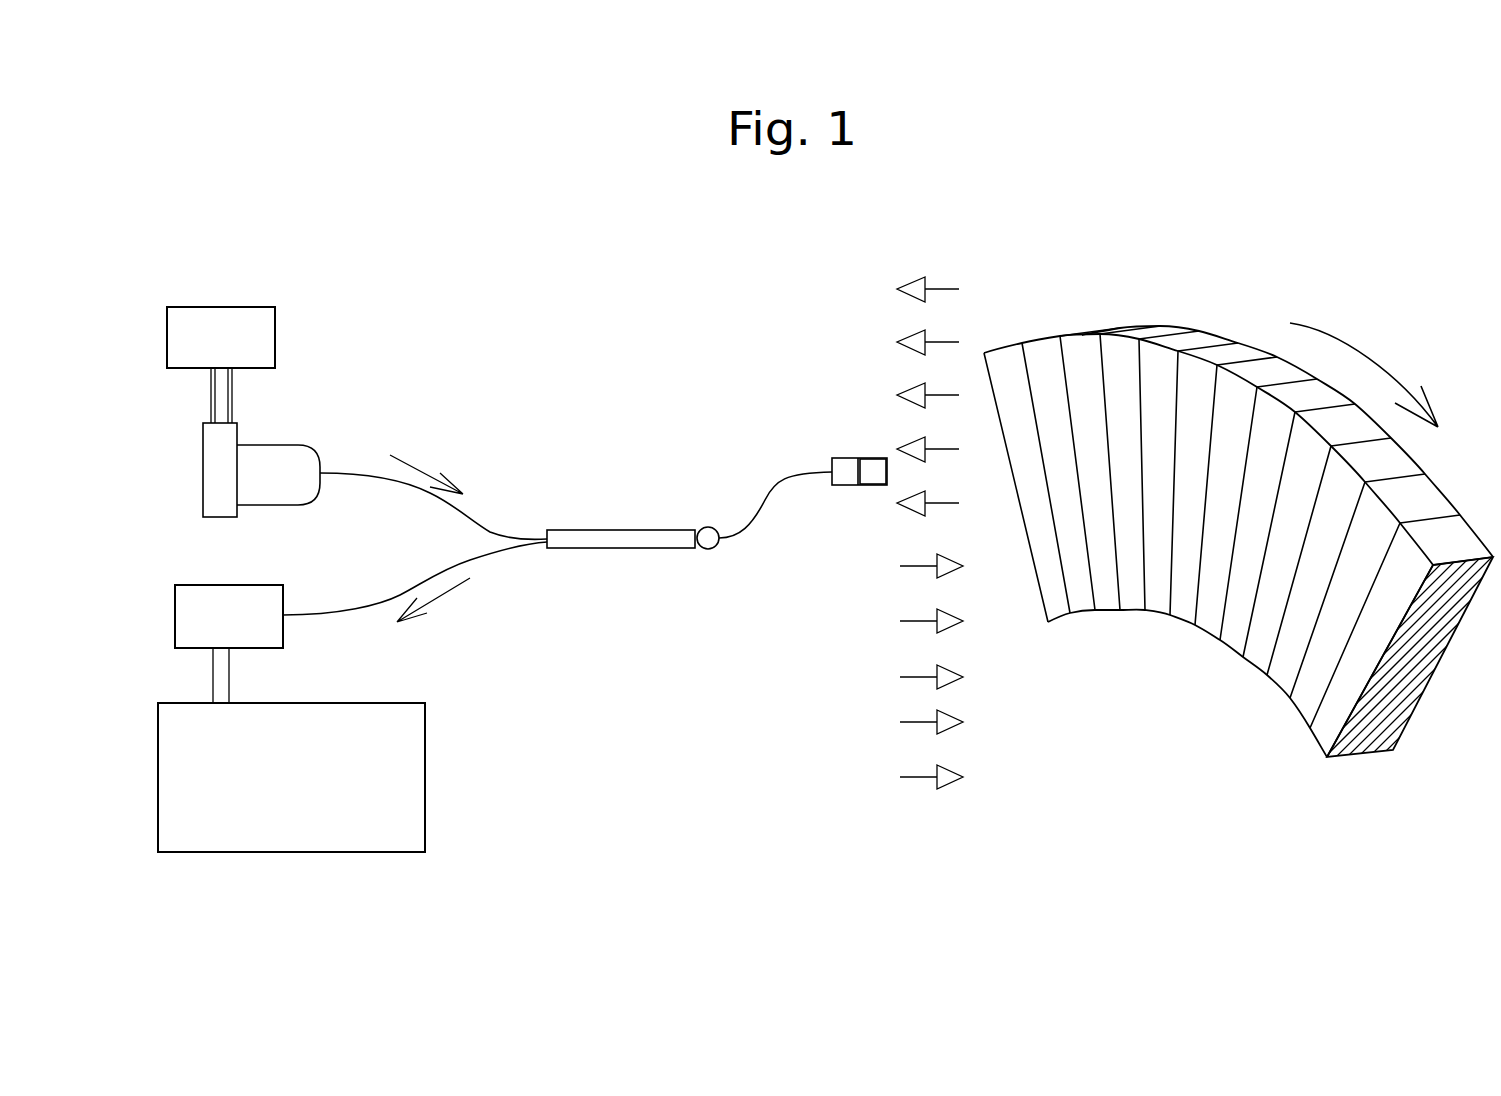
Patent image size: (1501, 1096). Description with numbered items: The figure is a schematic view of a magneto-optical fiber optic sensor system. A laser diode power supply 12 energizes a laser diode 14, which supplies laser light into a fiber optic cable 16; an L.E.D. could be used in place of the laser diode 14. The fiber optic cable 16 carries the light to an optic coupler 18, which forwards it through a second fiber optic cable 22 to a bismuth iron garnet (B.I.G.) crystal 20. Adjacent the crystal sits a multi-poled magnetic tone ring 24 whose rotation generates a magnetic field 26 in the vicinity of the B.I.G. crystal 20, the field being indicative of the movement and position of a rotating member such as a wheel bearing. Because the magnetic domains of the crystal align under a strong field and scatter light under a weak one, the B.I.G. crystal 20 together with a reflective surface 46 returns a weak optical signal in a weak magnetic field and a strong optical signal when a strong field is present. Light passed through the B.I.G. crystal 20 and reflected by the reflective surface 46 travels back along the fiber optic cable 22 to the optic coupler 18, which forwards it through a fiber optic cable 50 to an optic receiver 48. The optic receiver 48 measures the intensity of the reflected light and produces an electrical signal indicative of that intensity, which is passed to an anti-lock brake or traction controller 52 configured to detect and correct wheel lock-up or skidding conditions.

The laser diode power supply 12 is at (219, 307).
The laser diode 14 is at (262, 445).
The fiber optic cable 16 is at (477, 525).
The optic coupler 18 is at (647, 549).
The bismuth iron garnet (B.I.G.) crystal 20 is at (845, 458).
The fiber optic cable 22 is at (770, 496).
The multi-poled magnetic tone ring 24 is at (1188, 330).
The magnetic field 26 is at (911, 280).
The reflective surface 46 is at (878, 485).
The optic receiver 48 is at (230, 585).
The fiber optic cable 50 is at (388, 600).
The anti-lock brake or traction controller 52 is at (425, 731).